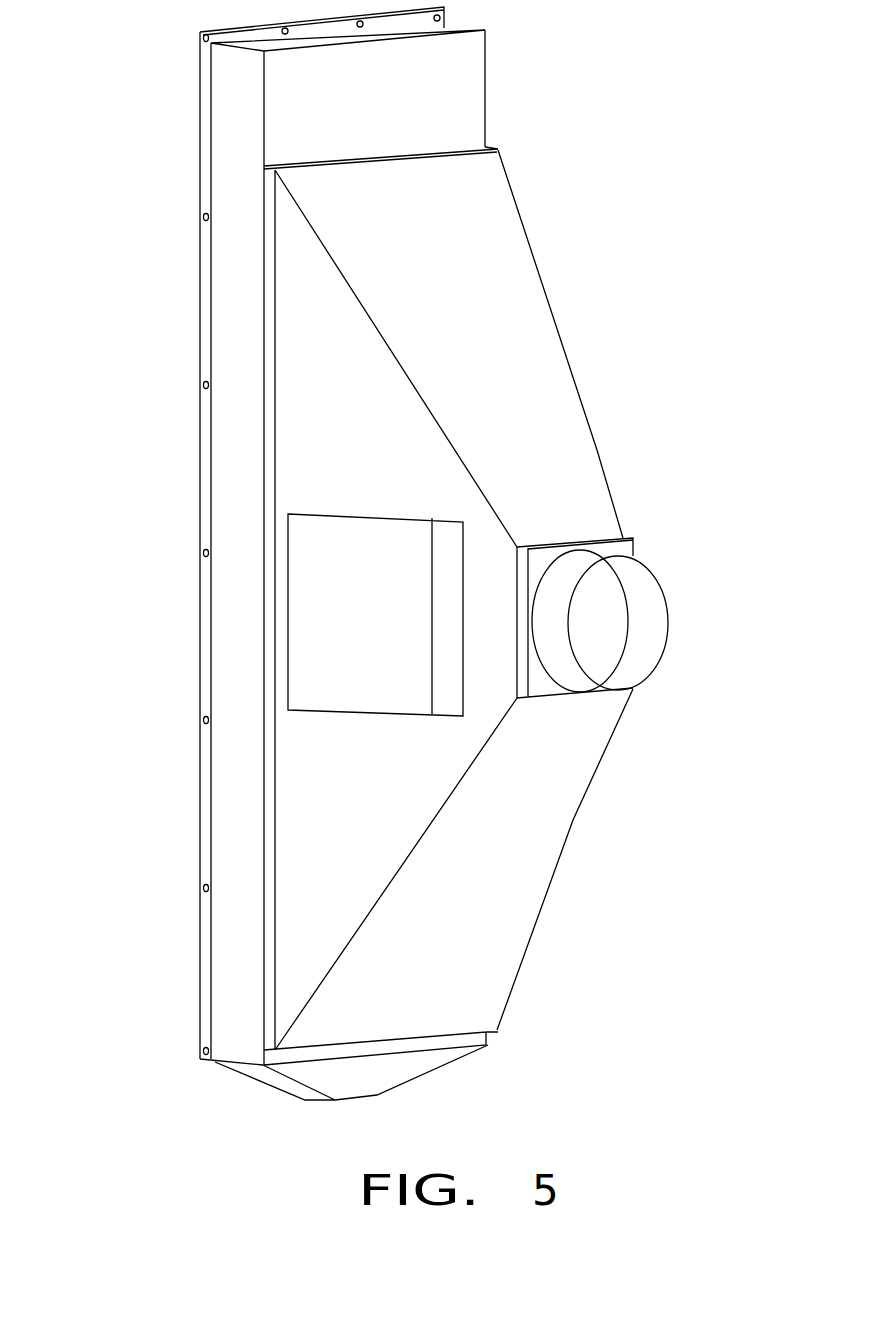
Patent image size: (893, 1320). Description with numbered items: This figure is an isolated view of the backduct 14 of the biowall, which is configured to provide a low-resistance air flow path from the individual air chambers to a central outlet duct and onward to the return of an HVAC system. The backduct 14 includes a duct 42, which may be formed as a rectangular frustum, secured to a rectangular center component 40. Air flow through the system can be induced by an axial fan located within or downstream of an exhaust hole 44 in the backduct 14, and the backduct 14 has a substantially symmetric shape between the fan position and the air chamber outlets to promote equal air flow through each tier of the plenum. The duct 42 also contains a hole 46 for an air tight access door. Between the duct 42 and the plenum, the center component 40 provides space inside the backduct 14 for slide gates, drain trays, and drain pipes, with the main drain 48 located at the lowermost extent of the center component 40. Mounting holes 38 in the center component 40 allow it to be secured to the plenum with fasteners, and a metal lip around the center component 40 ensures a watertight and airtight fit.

The backduct 14 is at (409, 569).
The mounting holes 38 is at (370, 28).
The center component 40 is at (487, 114).
The duct 42 is at (599, 463).
The exhaust hole 44 is at (666, 642).
The hole 46 is at (468, 716).
The main drain 48 is at (376, 1095).